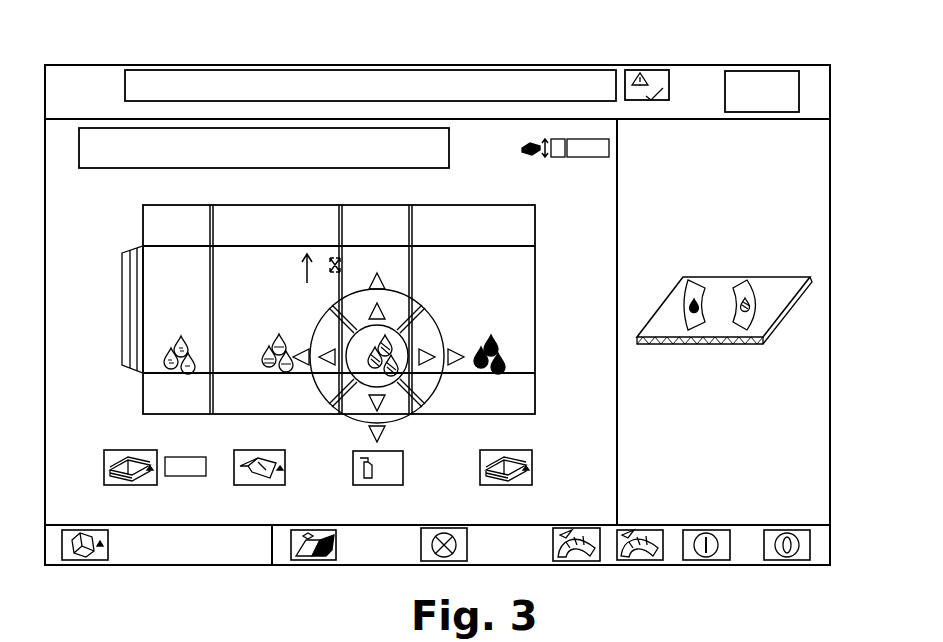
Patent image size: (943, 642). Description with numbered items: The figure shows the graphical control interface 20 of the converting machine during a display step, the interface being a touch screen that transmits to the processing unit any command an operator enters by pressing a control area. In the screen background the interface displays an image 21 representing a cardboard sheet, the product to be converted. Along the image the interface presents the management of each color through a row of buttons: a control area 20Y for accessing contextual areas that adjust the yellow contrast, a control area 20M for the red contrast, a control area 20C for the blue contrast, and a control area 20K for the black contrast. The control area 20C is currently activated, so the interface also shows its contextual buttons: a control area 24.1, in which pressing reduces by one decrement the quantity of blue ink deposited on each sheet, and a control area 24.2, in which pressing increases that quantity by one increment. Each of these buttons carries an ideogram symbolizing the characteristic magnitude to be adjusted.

The graphical control interface 20 is at (706, 45).
The image 21 is at (150, 217).
The control area 20Y is at (184, 371).
The control area 20M is at (282, 371).
The control area 20C is at (391, 372).
The control area 20K is at (498, 350).
The control area 24.1 is at (691, 322).
The control area 24.2 is at (744, 325).